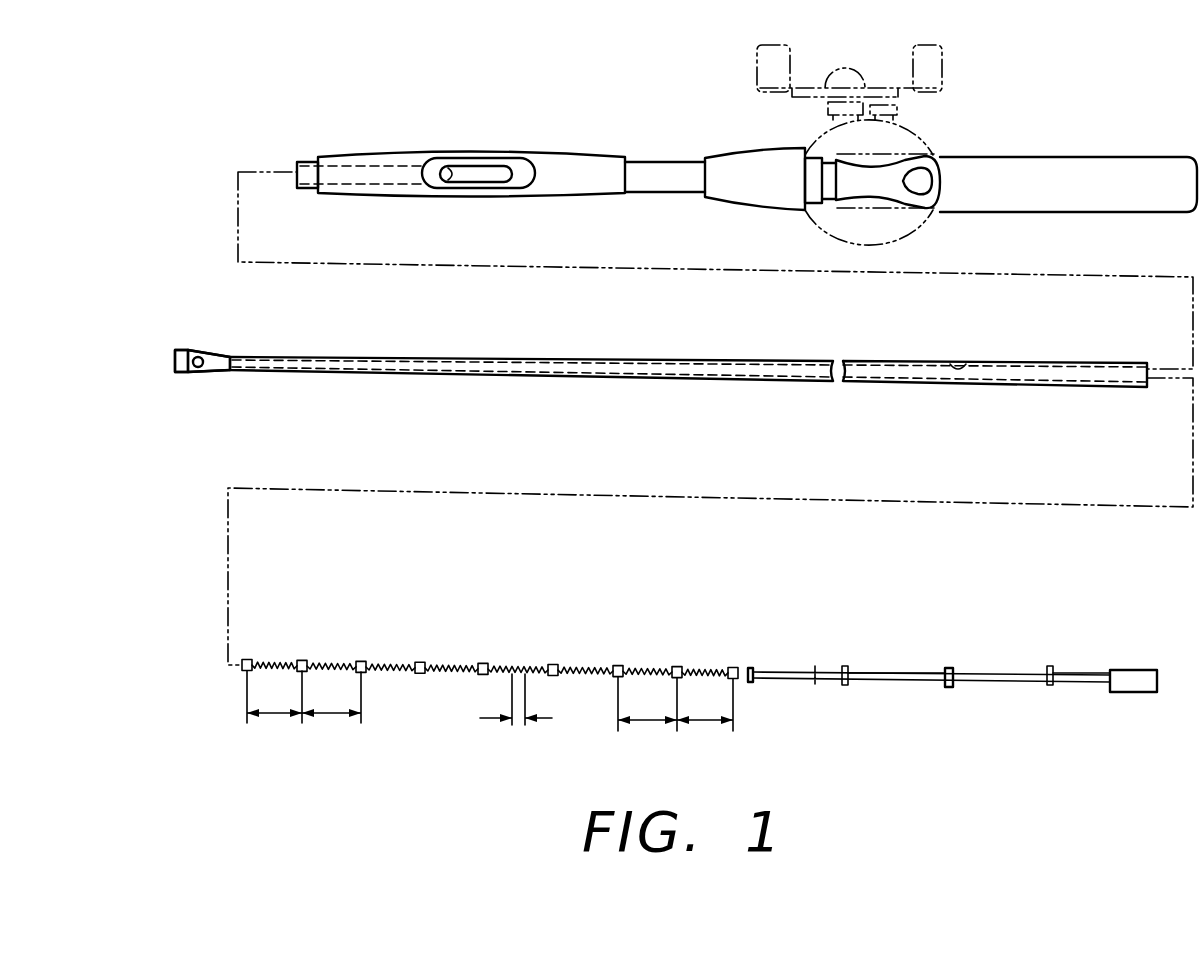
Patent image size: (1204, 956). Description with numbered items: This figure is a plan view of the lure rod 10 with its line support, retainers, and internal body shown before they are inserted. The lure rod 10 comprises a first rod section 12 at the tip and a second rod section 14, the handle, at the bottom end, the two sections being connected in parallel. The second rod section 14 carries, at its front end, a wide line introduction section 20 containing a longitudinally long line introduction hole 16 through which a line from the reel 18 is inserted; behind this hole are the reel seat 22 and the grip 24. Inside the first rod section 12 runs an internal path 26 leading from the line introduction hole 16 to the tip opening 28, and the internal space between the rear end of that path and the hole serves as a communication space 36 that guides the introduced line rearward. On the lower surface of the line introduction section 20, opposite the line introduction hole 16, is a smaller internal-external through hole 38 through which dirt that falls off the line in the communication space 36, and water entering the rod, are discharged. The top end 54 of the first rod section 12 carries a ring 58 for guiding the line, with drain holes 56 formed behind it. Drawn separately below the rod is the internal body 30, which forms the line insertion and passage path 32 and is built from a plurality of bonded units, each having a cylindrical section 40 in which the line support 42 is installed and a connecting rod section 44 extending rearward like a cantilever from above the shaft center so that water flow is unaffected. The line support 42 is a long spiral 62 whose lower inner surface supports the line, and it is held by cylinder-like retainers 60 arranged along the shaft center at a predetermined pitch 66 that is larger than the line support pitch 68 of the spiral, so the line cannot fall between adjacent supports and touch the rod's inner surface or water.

The lure rod 10 is at (747, 157).
The first rod section 12 is at (650, 377).
The second rod section 14 is at (660, 170).
The line introduction hole 16 is at (523, 190).
The reel 18 is at (932, 145).
The line introduction section 20 is at (461, 163).
The reel seat 22 is at (877, 196).
The grip 24 is at (1150, 204).
The internal path 26 is at (947, 362).
The tip opening 28 is at (166, 360).
The internal body 30 is at (969, 617).
The line insertion and passage path 32 is at (952, 621).
The communication space 36 is at (457, 172).
The internal-external through hole 38 is at (470, 178).
The cylindrical section 40 is at (843, 665).
The line support 42 is at (490, 661).
The connecting rod section 44 is at (979, 639).
The top end 54 is at (213, 358).
The drain holes 56 is at (200, 367).
The ring 58 is at (182, 377).
The retainers 60 is at (420, 660).
The spiral 62 is at (585, 666).
The predetermined pitch 66 is at (490, 718).
The line support pitch 68 is at (514, 727).